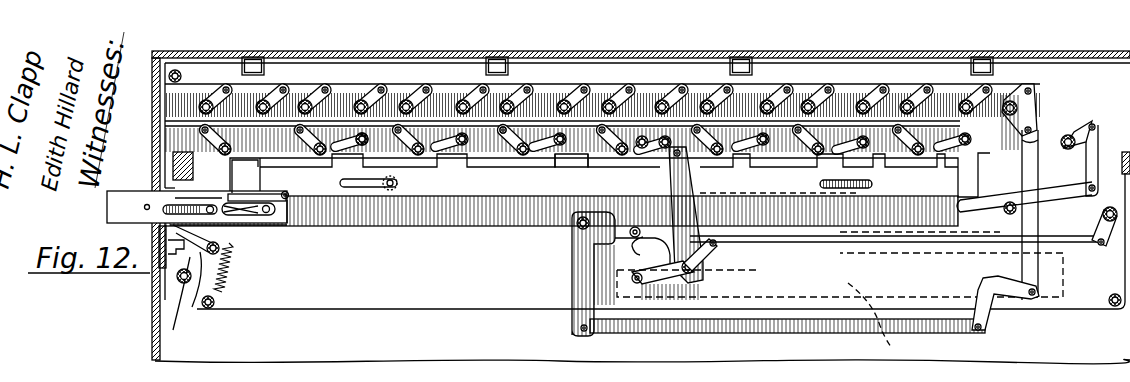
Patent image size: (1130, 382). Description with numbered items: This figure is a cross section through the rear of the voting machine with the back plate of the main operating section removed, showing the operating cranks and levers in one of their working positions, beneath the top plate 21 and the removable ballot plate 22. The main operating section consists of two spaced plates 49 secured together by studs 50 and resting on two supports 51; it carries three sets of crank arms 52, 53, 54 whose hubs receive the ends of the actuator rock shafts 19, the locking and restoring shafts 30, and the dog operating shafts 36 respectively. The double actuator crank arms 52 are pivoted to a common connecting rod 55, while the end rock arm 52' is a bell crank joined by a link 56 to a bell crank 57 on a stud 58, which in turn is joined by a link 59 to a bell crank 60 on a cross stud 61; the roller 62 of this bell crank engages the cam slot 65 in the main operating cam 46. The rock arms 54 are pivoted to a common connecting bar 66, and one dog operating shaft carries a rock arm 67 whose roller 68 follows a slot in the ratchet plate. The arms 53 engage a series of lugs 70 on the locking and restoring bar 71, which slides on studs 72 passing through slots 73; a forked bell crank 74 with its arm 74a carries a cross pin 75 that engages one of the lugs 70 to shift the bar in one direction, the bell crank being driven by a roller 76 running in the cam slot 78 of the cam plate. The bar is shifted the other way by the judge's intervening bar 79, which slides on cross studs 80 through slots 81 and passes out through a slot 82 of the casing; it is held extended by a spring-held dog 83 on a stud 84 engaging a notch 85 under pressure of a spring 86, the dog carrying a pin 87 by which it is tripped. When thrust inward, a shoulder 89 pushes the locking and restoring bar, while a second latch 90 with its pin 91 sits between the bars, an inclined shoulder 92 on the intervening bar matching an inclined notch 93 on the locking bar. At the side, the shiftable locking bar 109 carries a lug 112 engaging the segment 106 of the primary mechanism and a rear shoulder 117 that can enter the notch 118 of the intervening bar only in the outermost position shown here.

The actuator rock shafts 19 is at (436, 100).
The top plate 21 is at (676, 60).
The ballot plate 22 is at (598, 54).
The locking and restoring shafts 30 is at (372, 146).
The dog operating shafts 36 is at (324, 154).
The cam plate 46 is at (880, 319).
The plates 49 is at (661, 241).
The studs 50 is at (183, 77).
The supports 51 is at (182, 153).
The crank arms 52 is at (589, 89).
The end rock arm 52' is at (1046, 110).
The crank arms 53 is at (560, 167).
The crank arms 54 is at (440, 152).
The connecting rod 55 is at (872, 88).
The link 56 is at (1030, 150).
The bell crank 57 is at (992, 312).
The stud 58 is at (983, 284).
The link 59 is at (768, 325).
The bell crank 60 is at (574, 262).
The cross stud 61 is at (576, 226).
The pin or roller 62 is at (636, 240).
The cam slot 65 is at (918, 236).
The connecting bar 66 is at (490, 134).
The rock arm 67 is at (648, 154).
The pin or roller 68 is at (642, 134).
The lugs 70 is at (470, 167).
The locking and restoring bar 71 is at (458, 212).
The studs 72 is at (390, 200).
The slots 73 is at (346, 232).
The bell crank 74 is at (693, 228).
The lever arm 74a is at (698, 264).
The cross pin 75 is at (690, 162).
The pin or roller 76 is at (640, 284).
The cam slot 78 is at (790, 278).
The intervening bar 79 is at (288, 226).
The cross studs 80 is at (232, 202).
The slots 81 is at (195, 198).
The slot 82 is at (163, 188).
The spring-held dog 83 is at (186, 287).
The stud 84 is at (226, 275).
The notch 85 is at (168, 214).
The spring 86 is at (216, 296).
The pin 87 is at (222, 252).
The shoulder 89 is at (238, 190).
The controlling latch 90 is at (250, 194).
The pin 91 is at (290, 194).
The upwardly inclined shoulder 92 is at (290, 215).
The upwardly inclined notch 93 is at (280, 180).
The segment 106 is at (174, 332).
The locking bar 109 is at (158, 262).
The lug 112 is at (176, 256).
The shoulder or lug 117 is at (170, 165).
The notch 118 is at (184, 207).